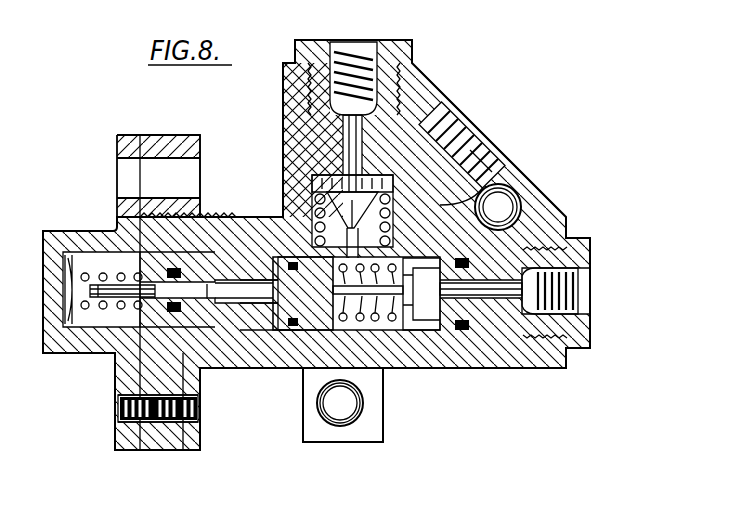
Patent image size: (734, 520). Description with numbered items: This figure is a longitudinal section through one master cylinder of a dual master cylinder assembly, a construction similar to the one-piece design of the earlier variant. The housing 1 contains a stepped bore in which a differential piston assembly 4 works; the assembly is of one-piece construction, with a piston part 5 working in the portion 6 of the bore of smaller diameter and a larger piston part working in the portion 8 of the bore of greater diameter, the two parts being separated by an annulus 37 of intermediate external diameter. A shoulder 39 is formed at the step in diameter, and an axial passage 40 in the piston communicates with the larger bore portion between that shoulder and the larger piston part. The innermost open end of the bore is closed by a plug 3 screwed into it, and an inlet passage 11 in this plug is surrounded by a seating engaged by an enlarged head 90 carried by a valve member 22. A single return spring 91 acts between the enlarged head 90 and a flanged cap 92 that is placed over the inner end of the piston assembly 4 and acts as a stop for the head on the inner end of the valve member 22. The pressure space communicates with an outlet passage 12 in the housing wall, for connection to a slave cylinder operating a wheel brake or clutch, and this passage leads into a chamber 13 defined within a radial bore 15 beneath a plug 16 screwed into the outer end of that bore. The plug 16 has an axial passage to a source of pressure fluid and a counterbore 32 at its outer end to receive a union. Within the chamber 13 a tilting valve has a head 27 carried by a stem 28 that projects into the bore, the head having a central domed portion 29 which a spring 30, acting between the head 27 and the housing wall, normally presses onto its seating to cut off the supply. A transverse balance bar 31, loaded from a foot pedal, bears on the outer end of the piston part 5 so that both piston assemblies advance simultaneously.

The housing 1 is at (216, 352).
The plug 3 is at (582, 332).
The differential piston assembly 4 is at (245, 368).
The piston part 5 is at (186, 425).
The portion of the bore of smaller diameter 6 is at (147, 400).
The portion of the bore of greater diameter 8 is at (250, 368).
The inlet passage 11 is at (495, 298).
The outlet passage 12 is at (482, 173).
The chamber 13 is at (330, 196).
The radial bore 15 is at (322, 194).
The plug 16 is at (400, 103).
The valve member 22 is at (392, 345).
The head 27 is at (305, 117).
The stem 28 is at (500, 200).
The central domed portion 29 is at (448, 122).
The spring 30 is at (472, 151).
The transverse balance bar 31 is at (75, 340).
The counterbore 32 is at (400, 55).
The annulus 37 is at (205, 282).
The shoulder 39 is at (218, 222).
The axial passage 40 is at (262, 280).
The enlarged head 90 is at (458, 350).
The return spring 91 is at (420, 332).
The flanged cap 92 is at (300, 350).